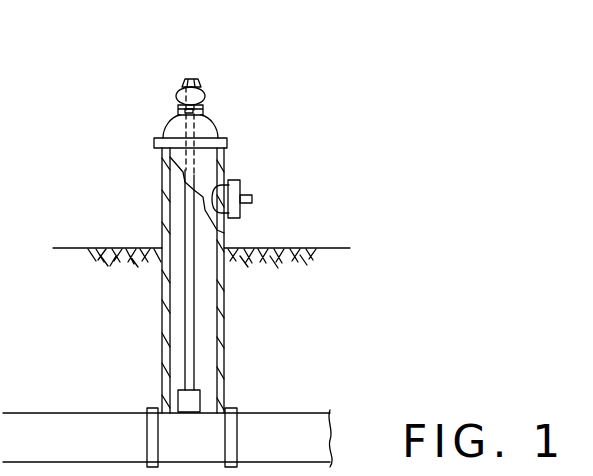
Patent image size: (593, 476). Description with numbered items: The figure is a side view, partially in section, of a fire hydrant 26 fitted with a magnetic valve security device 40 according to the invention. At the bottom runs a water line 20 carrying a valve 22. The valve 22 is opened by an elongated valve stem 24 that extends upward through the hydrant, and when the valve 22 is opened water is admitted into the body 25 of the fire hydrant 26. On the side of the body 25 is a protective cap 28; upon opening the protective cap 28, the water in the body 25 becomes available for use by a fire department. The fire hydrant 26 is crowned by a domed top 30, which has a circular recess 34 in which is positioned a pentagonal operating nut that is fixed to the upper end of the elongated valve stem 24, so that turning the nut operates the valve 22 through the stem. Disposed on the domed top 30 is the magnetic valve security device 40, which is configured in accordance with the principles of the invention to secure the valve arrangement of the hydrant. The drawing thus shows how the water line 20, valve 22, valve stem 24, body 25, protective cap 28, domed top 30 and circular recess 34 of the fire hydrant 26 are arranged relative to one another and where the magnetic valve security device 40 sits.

The water line 20 is at (292, 432).
The valve 22 is at (200, 425).
The elongated valve stem 24 is at (190, 342).
The body 25 is at (162, 200).
The fire hydrant 26 is at (213, 158).
The protective cap 28 is at (240, 185).
The domed top 30 is at (208, 128).
The circular recess 34 is at (208, 108).
The magnetic valve security device 40 is at (193, 70).